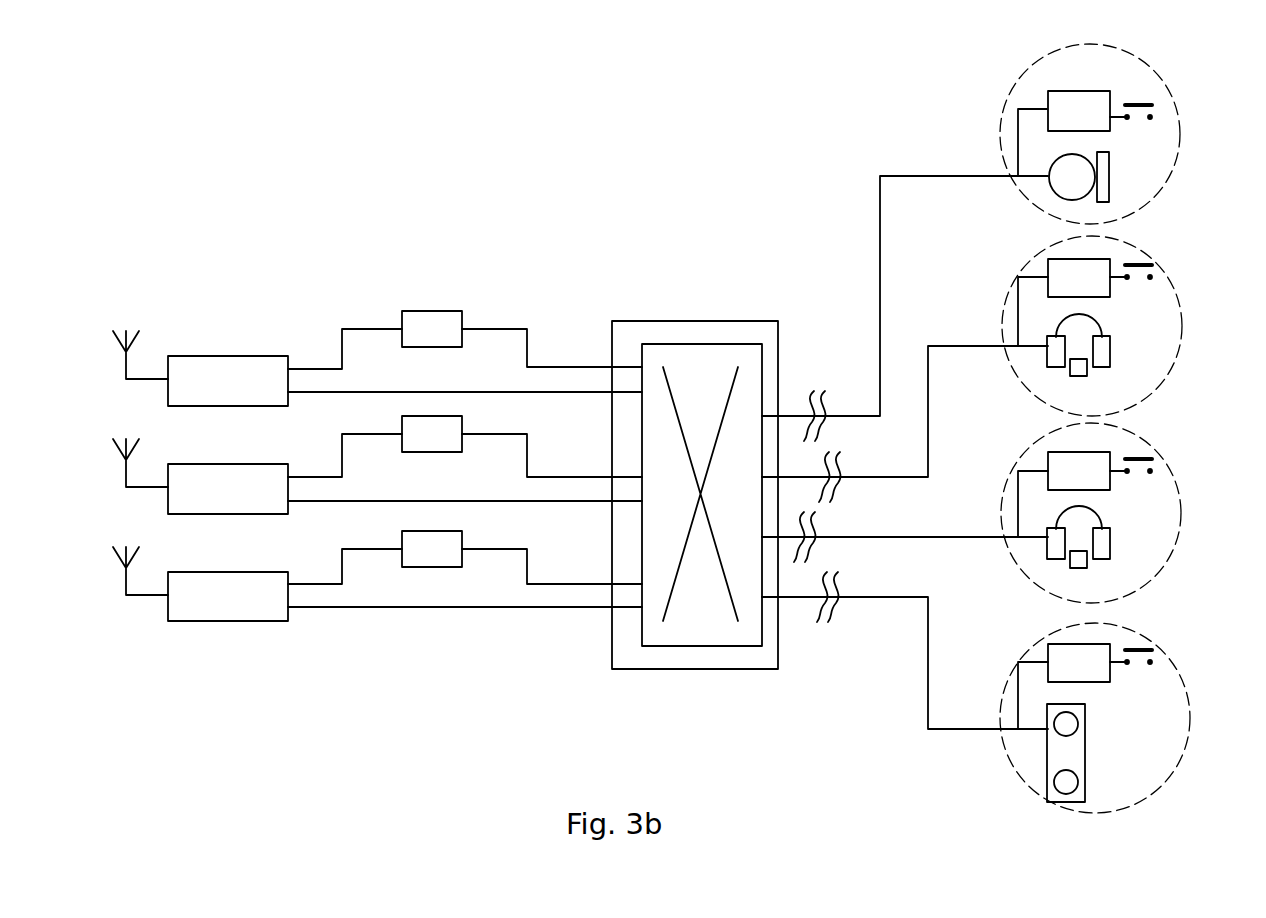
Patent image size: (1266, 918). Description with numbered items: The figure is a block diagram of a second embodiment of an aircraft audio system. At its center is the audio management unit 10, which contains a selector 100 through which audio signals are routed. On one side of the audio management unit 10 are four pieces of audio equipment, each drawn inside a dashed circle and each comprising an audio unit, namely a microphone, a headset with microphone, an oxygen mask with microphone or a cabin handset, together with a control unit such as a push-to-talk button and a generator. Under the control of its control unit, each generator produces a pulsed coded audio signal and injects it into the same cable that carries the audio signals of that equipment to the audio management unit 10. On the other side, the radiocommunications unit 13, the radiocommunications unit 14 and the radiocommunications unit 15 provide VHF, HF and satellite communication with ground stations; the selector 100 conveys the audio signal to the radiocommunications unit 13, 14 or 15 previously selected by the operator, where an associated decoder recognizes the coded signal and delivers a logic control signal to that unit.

The audio management unit 10 is at (733, 321).
The selector 100 is at (690, 344).
The radiocommunications unit 13 is at (206, 333).
The radiocommunications unit 14 is at (213, 465).
The radiocommunications unit 15 is at (202, 549).